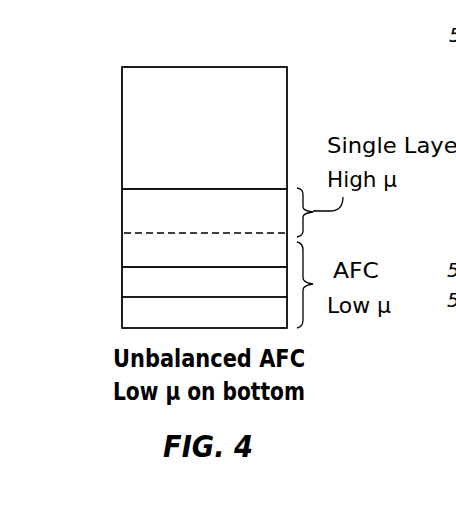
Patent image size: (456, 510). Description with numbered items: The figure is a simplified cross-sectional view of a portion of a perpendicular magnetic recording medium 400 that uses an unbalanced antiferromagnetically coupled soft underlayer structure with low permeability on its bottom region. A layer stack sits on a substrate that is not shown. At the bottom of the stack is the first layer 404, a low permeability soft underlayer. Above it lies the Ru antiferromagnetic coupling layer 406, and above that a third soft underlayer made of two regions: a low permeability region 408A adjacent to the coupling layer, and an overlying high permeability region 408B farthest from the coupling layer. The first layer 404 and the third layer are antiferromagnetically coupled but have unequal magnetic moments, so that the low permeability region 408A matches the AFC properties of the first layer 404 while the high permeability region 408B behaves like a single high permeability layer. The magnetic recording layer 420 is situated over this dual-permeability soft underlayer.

The perpendicular magnetic recording medium 400 is at (121, 50).
The magnetic recording layer 420 is at (122, 127).
The high permeability region 408B is at (122, 213).
The low permeability region 408A is at (122, 249).
The antiferromagnetic coupling layer 406 is at (122, 281).
The first layer 404 is at (122, 312).